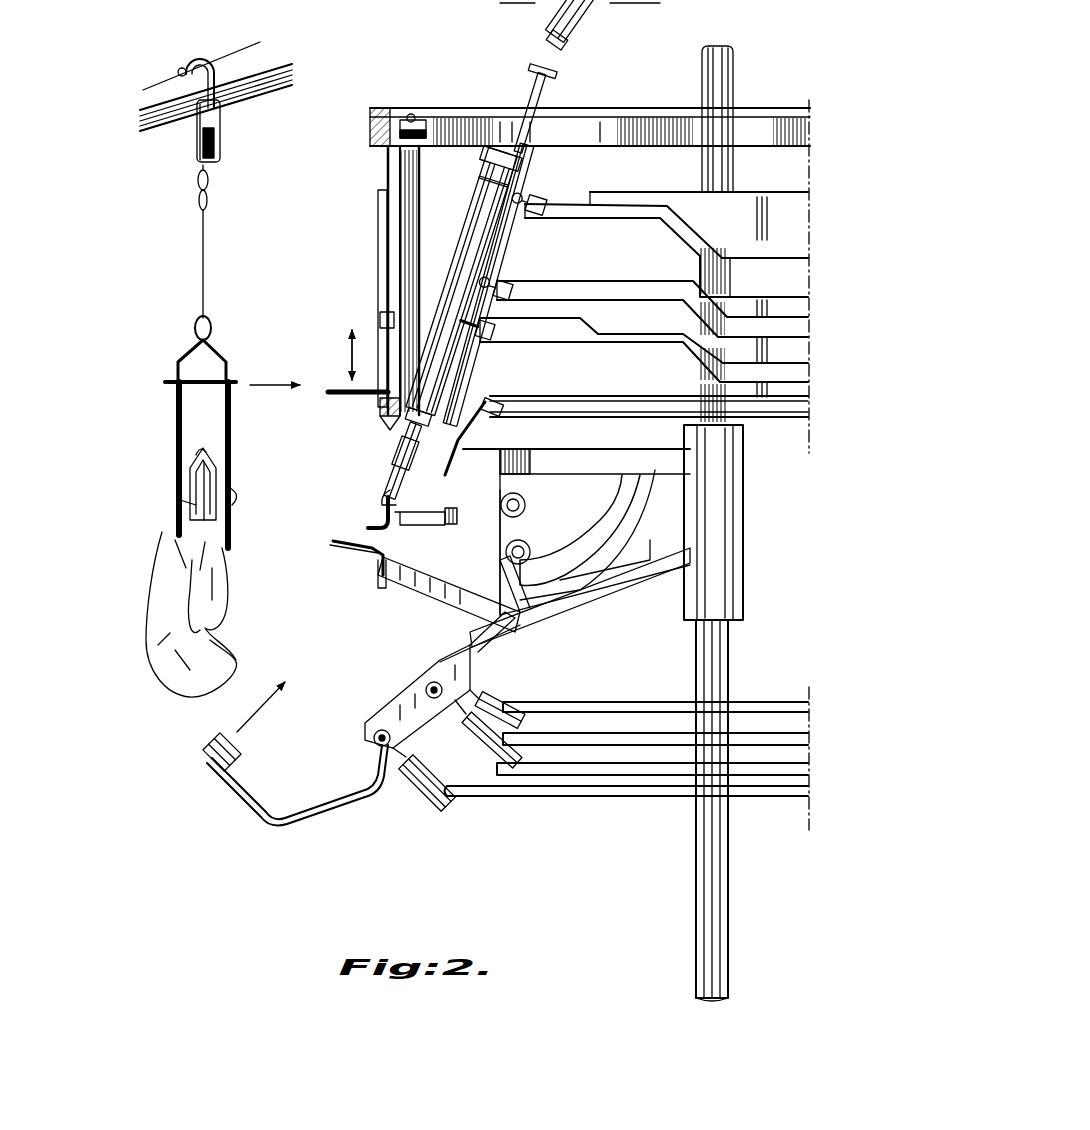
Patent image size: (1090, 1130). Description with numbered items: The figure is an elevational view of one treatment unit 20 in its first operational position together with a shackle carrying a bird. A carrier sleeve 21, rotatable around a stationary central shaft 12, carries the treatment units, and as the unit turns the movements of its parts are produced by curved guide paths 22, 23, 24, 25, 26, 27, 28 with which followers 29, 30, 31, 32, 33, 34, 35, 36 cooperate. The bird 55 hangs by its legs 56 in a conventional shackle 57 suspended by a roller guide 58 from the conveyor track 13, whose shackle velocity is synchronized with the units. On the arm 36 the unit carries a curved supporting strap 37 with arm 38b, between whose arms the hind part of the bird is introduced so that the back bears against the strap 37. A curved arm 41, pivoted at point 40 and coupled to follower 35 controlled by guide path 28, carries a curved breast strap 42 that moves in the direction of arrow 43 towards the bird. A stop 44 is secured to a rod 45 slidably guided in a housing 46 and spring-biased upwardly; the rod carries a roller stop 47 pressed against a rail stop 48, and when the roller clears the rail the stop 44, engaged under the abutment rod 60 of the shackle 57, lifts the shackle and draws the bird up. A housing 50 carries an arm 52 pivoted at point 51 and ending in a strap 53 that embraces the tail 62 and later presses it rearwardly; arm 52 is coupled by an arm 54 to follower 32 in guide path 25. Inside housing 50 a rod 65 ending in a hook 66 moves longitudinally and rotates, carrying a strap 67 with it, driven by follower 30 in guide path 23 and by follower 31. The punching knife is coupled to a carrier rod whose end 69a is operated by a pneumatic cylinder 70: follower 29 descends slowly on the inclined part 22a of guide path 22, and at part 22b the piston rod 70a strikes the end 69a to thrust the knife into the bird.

The stationary central shaft 12 is at (733, 68).
The conveyor track 13 is at (250, 72).
The treatment unit 20 is at (467, 206).
The carrier sleeve 21 is at (735, 556).
The guide path 22 is at (666, 228).
The inclined part of guide path 22a is at (690, 236).
The part of guide path 22b is at (734, 257).
The guide path 23 is at (580, 293).
The guide path 24 is at (527, 337).
The guide path 25 is at (575, 398).
The guide path 26 is at (588, 716).
The guide path 27 is at (588, 760).
The guide path 28 is at (505, 790).
The follower 29 is at (545, 198).
The follower 30 is at (514, 282).
The follower 31 is at (480, 343).
The follower 32 is at (515, 418).
The follower 33 is at (492, 706).
The follower 34 is at (483, 740).
The follower 35 is at (428, 802).
The arm 36 is at (437, 607).
The curved supporting strap 37 is at (376, 579).
The arm of supporting strap 38b is at (347, 548).
The pivot point 40 is at (365, 746).
The curved arm 41 is at (305, 810).
The curved breast strap 42 is at (235, 756).
The arrow 43 is at (247, 715).
The stop 44 is at (330, 392).
The rod 45 is at (390, 318).
The housing 46 is at (398, 195).
The roller stop 47 is at (428, 122).
The rail stop 48 is at (410, 114).
The housing 50 is at (472, 272).
The pivot point 51 is at (382, 446).
The arm 52 is at (396, 505).
The strap 53 is at (366, 522).
The arm 54 is at (465, 448).
The bird 55 is at (160, 640).
The legs 56 is at (220, 536).
The shackle 57 is at (176, 422).
The roller guide 58 is at (226, 128).
The abutment rod 60 is at (212, 370).
The tail 62 is at (180, 543).
The rod 65 is at (392, 460).
The hook 66 is at (400, 505).
The strap 67 is at (421, 458).
The end of carrier rod 69a is at (548, 100).
The pneumatic cylinder 70 is at (584, 14).
The piston rod 70a is at (552, 32).